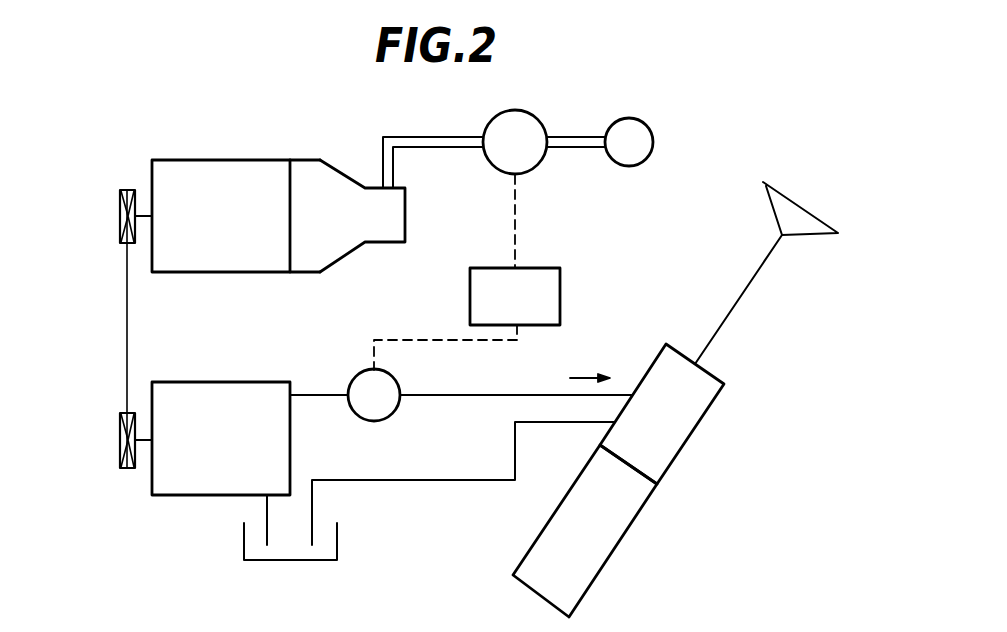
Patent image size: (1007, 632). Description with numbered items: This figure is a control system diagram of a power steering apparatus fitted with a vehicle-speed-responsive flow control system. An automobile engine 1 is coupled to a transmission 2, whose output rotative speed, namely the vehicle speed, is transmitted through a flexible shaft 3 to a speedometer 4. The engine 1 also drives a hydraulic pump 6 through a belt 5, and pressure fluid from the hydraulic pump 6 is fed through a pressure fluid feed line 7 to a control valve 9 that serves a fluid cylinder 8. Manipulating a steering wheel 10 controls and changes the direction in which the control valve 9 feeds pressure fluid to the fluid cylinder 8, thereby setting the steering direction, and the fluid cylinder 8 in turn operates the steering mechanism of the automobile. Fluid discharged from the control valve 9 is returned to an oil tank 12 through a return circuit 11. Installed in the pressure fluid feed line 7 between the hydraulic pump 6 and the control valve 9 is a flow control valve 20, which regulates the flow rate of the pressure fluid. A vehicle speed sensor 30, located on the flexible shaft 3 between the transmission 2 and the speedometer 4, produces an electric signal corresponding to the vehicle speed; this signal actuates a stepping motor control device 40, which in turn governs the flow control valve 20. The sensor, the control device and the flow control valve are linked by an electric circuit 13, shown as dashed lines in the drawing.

The automobile engine 1 is at (230, 170).
The transmission 2 is at (343, 247).
The flexible shaft 3 is at (442, 137).
The speedometer 4 is at (648, 136).
The belt 5 is at (128, 338).
The hydraulic pump 6 is at (222, 392).
The pressure fluid feed line 7 is at (465, 397).
The fluid cylinder 8 is at (607, 538).
The control valve 9 is at (682, 432).
The steering wheel 10 is at (786, 196).
The return circuit 11 is at (440, 482).
The oil tank 12 is at (340, 550).
The electric circuit 13 is at (514, 224).
The flow control valve 20 is at (378, 412).
The vehicle speed sensor 30 is at (527, 128).
The stepping motor control device 40 is at (556, 296).